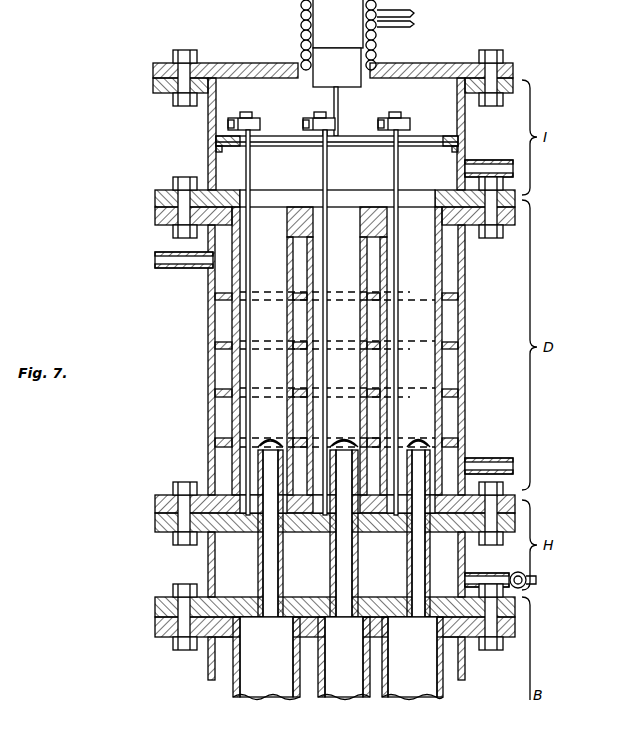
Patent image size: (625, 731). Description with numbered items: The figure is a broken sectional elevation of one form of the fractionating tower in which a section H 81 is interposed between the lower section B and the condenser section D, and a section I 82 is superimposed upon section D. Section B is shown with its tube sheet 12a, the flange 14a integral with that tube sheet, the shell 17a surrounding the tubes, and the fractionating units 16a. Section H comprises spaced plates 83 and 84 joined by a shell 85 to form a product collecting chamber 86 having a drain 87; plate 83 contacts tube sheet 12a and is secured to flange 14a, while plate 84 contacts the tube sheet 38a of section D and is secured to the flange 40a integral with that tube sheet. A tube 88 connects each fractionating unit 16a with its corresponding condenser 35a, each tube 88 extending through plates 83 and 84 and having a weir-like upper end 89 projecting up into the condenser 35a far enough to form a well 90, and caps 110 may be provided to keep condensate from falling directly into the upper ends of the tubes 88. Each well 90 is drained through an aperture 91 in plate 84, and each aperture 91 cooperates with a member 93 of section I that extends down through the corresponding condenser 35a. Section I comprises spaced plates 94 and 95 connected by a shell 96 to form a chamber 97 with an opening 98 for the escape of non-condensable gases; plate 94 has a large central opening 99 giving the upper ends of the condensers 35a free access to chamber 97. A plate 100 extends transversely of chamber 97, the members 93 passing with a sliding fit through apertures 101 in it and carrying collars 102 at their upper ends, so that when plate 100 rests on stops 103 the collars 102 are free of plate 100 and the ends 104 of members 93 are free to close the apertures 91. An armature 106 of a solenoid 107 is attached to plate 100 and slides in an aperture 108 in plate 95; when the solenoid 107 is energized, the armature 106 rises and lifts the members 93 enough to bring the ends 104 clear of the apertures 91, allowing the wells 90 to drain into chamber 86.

The solenoid 107 is at (300, 30).
The aperture 108 is at (388, 63).
The armature 106 is at (361, 93).
The plate 95 is at (158, 68).
The shell 96 is at (207, 121).
The chamber 97 is at (462, 140).
The section I 82 is at (198, 146).
The opening 99 is at (236, 188).
The stops 103 is at (225, 150).
The plate 100 is at (336, 125).
The apertures 101 is at (304, 118).
The collars 102 is at (240, 116).
The member 93 is at (246, 178).
The opening 98 is at (490, 160).
The plate 94 is at (158, 200).
The condenser 35a is at (440, 322).
The weir-like upper end 89 is at (462, 428).
The well 90 is at (440, 470).
The tube sheet 38a is at (470, 458).
The flange 40a is at (512, 496).
The caps 110 is at (270, 438).
The product collecting chamber 86 is at (178, 495).
The plate 84 is at (158, 512).
The section H 81 is at (175, 551).
The shell 85 is at (207, 572).
The drain 87 is at (498, 573).
The plate 83 is at (158, 612).
The flange 14a is at (176, 640).
The tube sheet 12a is at (215, 645).
The fractionating unit 16a is at (378, 690).
The shell 17a is at (466, 677).
The aperture 91 is at (258, 527).
The ends 104 is at (328, 525).
The tube 88 is at (330, 572).